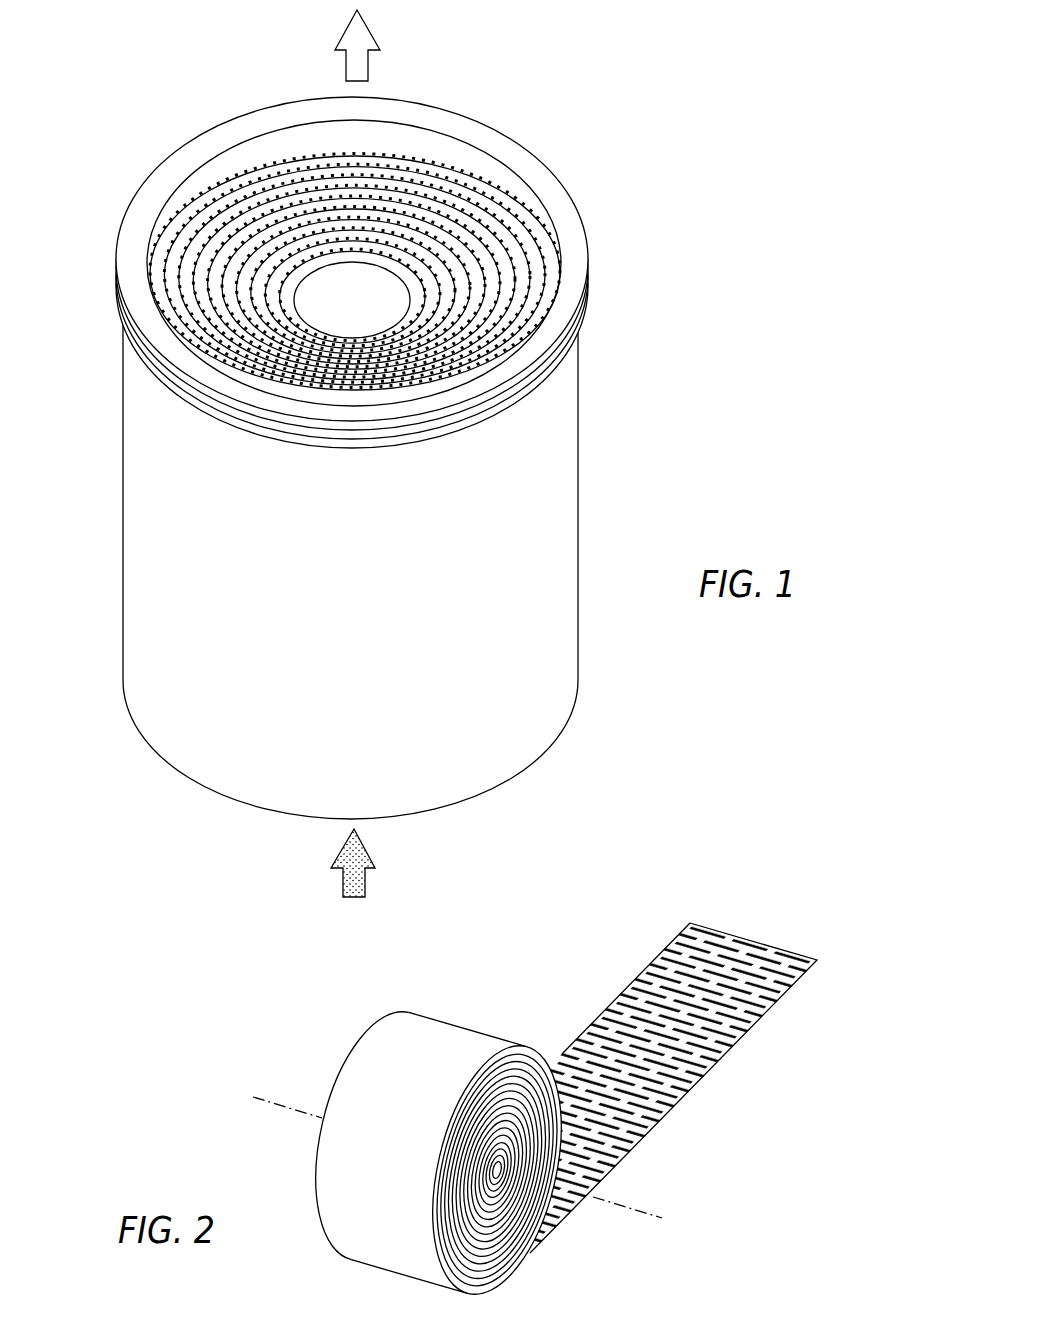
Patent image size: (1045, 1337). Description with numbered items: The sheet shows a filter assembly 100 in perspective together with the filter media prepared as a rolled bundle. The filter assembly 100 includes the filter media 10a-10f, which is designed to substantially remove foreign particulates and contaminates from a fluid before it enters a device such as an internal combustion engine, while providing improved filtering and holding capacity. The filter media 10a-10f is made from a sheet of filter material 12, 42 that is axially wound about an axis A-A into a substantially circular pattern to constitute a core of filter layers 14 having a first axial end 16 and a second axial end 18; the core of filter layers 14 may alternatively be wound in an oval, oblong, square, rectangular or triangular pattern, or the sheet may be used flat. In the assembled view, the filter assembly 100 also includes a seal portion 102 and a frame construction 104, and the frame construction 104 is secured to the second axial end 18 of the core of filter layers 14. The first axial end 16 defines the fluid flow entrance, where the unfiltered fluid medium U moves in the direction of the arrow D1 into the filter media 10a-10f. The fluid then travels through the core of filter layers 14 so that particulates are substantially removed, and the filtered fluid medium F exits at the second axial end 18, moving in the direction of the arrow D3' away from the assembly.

In FIG. 1, the filter assembly 100 is at (381, 462).
In FIG. 1, the seal portion 102 is at (381, 458).
In FIG. 1, the frame construction 104 is at (551, 190).
In FIG. 1, the first axial end 16 is at (158, 750).
In FIG. 2, the first axial end 16 is at (499, 1156).
In FIG. 1, the second axial end 18 is at (228, 180).
In FIG. 2, the second axial end 18 is at (345, 1063).
In FIG. 1, the filter media 10a-10f is at (332, 204).
In FIG. 2, the filter media 10a-10f is at (427, 1151).
In FIG. 2, the sheet of filter material 12 is at (610, 1059).
In FIG. 2, the sheet of filter material 42 is at (644, 945).
In FIG. 2, the core of filter layers 14 is at (496, 1170).
In FIG. 1, the direction of arrow for unfiltered fluid medium D1 is at (367, 883).
In FIG. 1, the direction of arrow for filtered fluid medium D3' is at (390, 45).
In FIG. 2, the axis A is at (457, 1159).